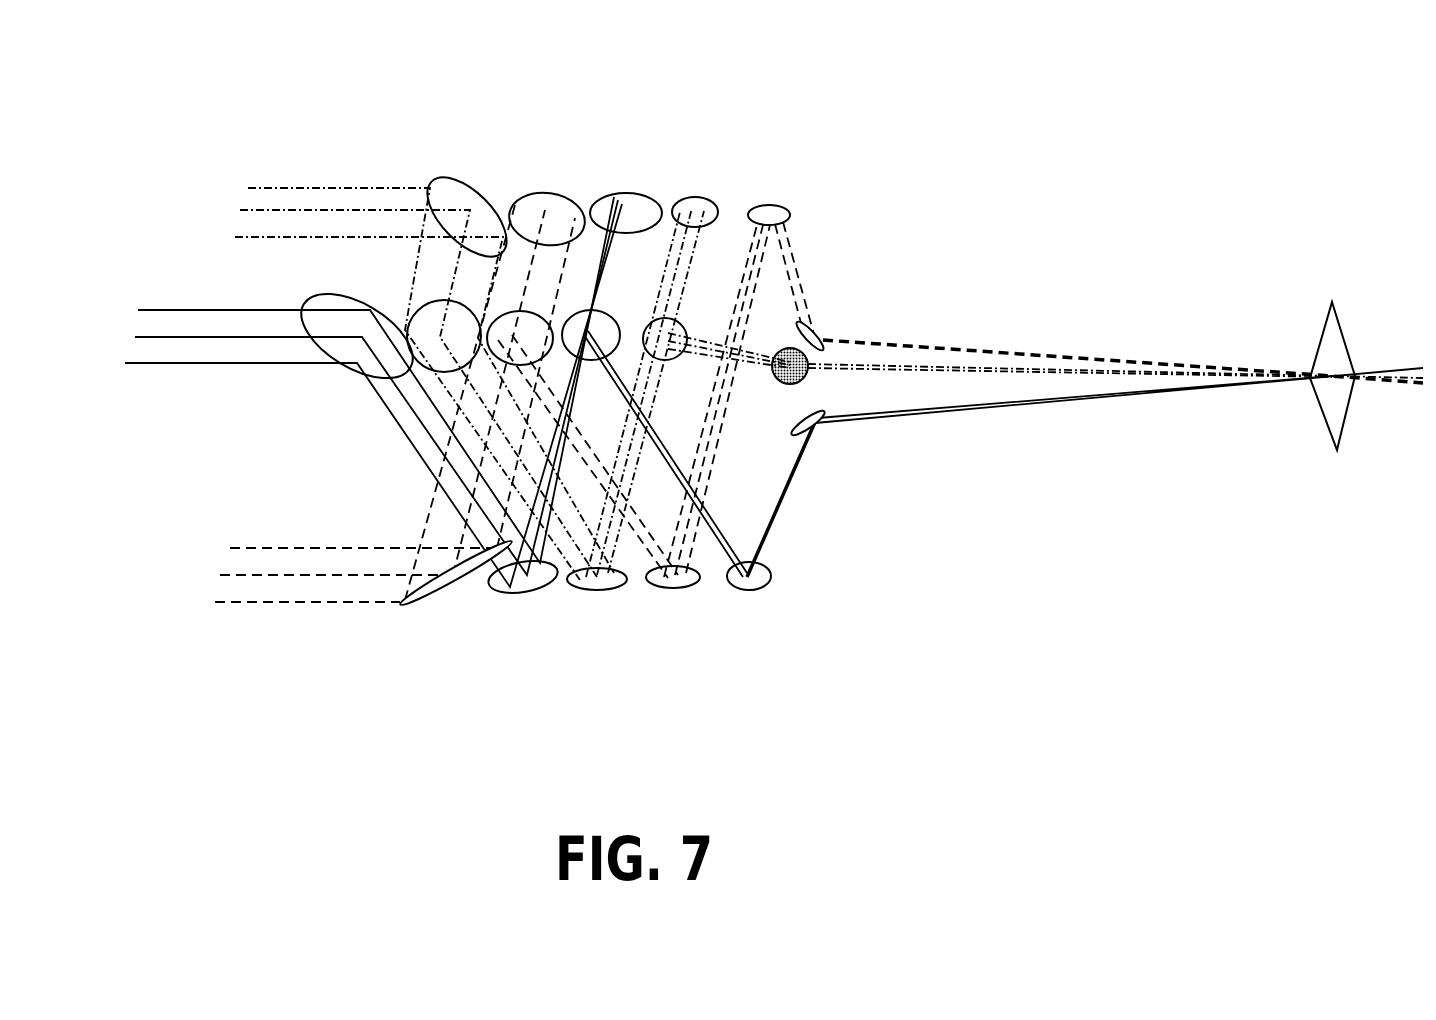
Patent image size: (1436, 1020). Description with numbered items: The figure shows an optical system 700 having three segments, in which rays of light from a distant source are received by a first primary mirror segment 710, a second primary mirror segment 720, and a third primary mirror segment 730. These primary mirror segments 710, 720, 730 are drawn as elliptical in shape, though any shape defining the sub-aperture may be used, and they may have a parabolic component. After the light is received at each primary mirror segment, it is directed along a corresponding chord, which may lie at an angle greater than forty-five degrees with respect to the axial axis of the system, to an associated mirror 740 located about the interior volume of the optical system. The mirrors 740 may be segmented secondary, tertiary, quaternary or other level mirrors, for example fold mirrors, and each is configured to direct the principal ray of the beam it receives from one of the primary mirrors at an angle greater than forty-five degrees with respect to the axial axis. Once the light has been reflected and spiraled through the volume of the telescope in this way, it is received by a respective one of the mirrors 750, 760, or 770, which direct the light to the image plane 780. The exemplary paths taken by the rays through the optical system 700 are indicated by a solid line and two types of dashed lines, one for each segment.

The optical system 700 is at (872, 123).
The first primary mirror segment 710 is at (435, 177).
The second primary mirror segment 720 is at (340, 370).
The third primary mirror segment 730 is at (423, 600).
The mirrors 740 is at (683, 195).
The mirror 750 is at (808, 428).
The mirror 760 is at (807, 373).
The mirror 770 is at (821, 334).
The image plane 780 is at (1332, 302).